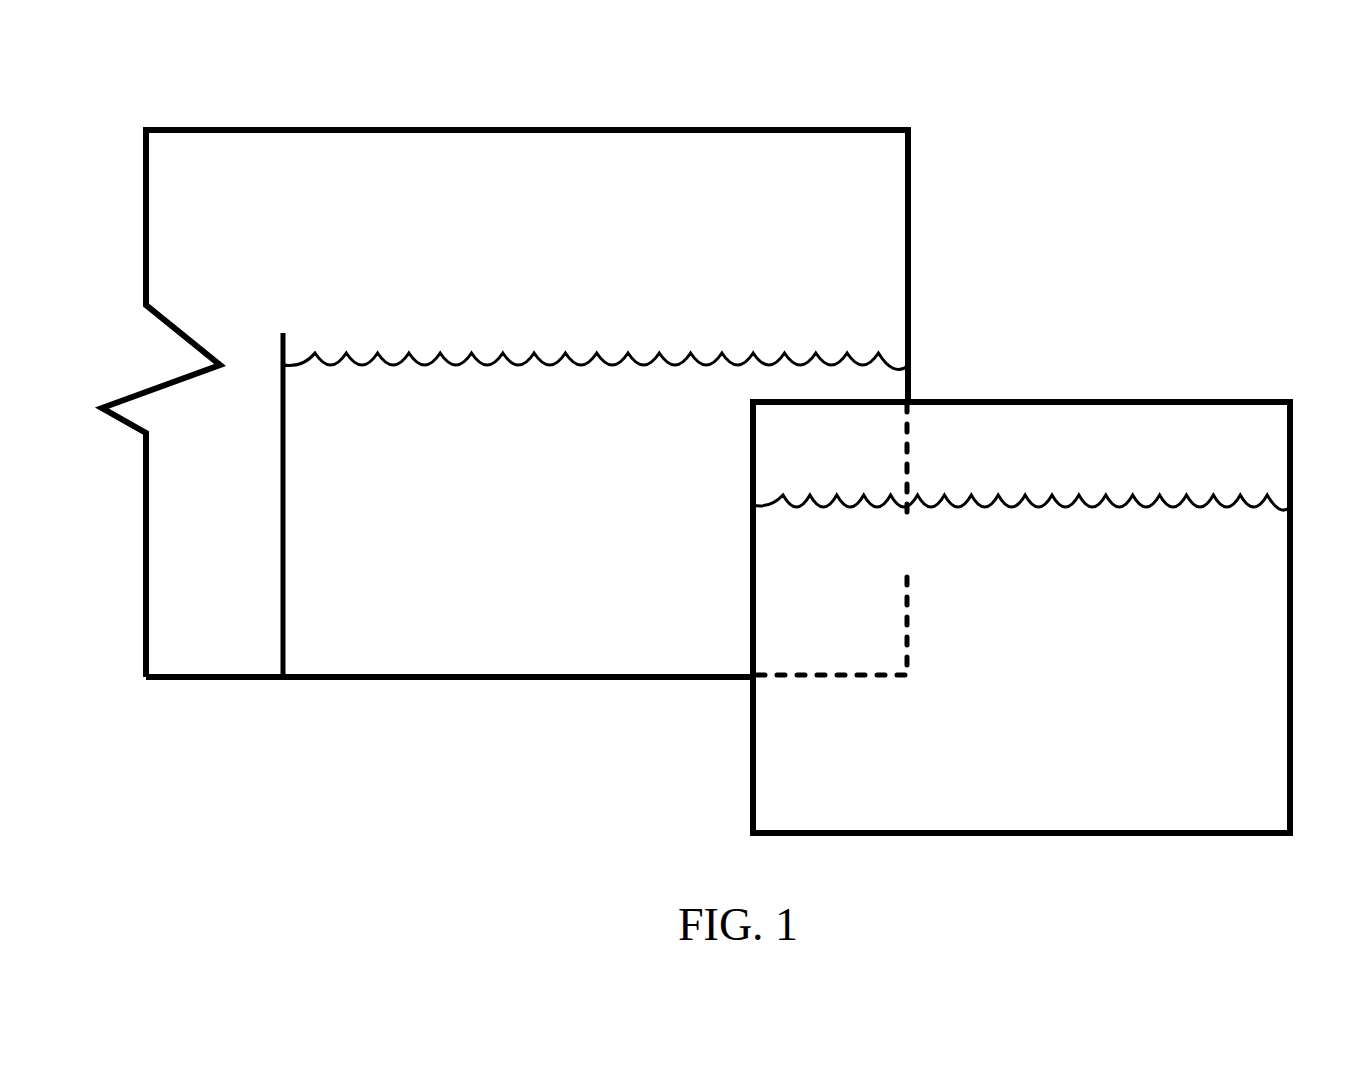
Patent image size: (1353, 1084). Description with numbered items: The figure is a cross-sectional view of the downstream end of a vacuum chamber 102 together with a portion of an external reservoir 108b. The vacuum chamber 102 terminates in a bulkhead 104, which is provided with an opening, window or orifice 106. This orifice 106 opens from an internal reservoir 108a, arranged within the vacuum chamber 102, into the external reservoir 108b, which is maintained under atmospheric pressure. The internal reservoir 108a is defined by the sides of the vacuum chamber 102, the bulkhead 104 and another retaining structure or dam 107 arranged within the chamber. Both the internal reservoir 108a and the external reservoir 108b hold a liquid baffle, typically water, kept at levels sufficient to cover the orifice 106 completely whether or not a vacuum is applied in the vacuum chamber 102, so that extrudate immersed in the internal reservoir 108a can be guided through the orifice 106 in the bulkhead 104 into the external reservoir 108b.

The vacuum chamber 102 is at (516, 130).
The bulkhead 104 is at (910, 313).
The orifice 106 is at (907, 547).
The dam 107 is at (280, 598).
The internal reservoir 108a is at (596, 597).
The external reservoir 108b is at (1018, 617).